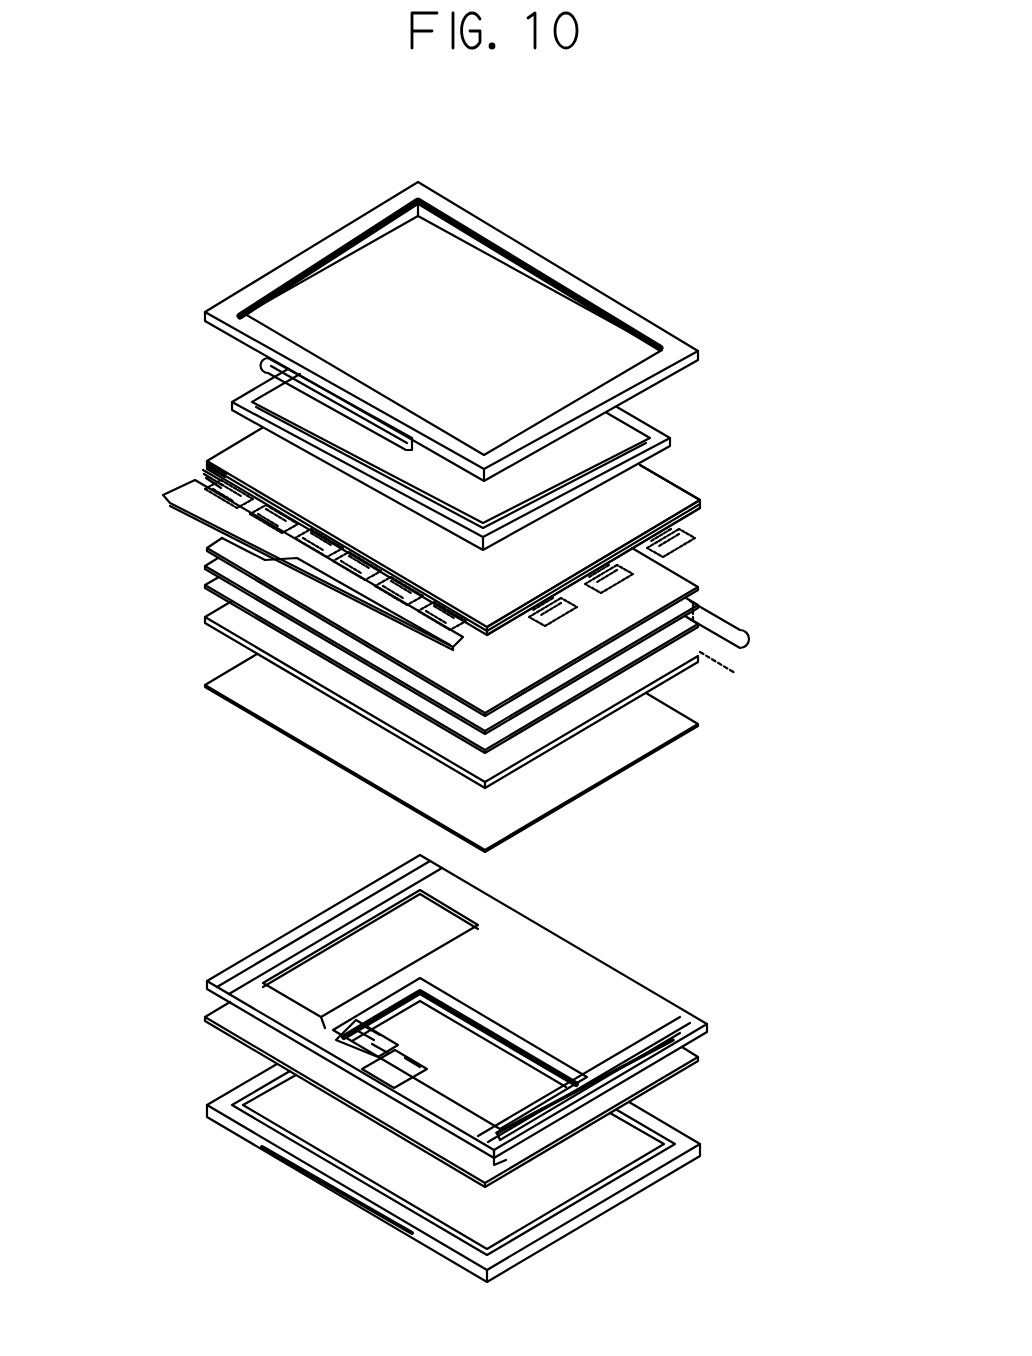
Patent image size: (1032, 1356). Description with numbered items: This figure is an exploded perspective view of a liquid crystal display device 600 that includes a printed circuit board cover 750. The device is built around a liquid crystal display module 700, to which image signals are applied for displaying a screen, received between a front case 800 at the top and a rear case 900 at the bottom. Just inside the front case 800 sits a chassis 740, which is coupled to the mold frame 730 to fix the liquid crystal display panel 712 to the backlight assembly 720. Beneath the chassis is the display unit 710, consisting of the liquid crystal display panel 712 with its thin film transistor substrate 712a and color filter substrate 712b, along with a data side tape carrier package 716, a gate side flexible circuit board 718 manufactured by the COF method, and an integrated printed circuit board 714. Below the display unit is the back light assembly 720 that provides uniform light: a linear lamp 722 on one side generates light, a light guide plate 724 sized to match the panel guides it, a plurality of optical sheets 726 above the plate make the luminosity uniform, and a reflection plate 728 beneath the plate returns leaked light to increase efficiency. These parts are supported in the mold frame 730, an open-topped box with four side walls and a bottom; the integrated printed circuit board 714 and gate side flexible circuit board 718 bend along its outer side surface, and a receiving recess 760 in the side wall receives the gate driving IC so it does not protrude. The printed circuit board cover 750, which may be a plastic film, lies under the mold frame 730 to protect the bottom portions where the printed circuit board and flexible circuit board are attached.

The liquid crystal display device 600 is at (647, 264).
The front case 800 is at (670, 321).
The chassis 740 is at (239, 366).
The display unit 710 is at (224, 433).
The liquid crystal display panel 712 is at (369, 527).
The thin film transistor substrate 712a is at (706, 523).
The color filter substrate 712b is at (672, 497).
The data side tape carrier package 716 is at (204, 466).
The gate side flexible circuit board 718 is at (652, 559).
The integrated printed circuit board 714 is at (161, 497).
The back light assembly 720 is at (122, 545).
The optical sheets 726 is at (198, 537).
The linear lamp 722 is at (748, 654).
The light guide plate 724 is at (566, 723).
The reflection plate 728 is at (551, 793).
The liquid crystal display module 700 is at (845, 426).
The mold frame 730 is at (234, 943).
The receiving recess 760 is at (601, 1100).
The printed circuit board cover 750 is at (246, 1031).
The rear case 900 is at (702, 1150).